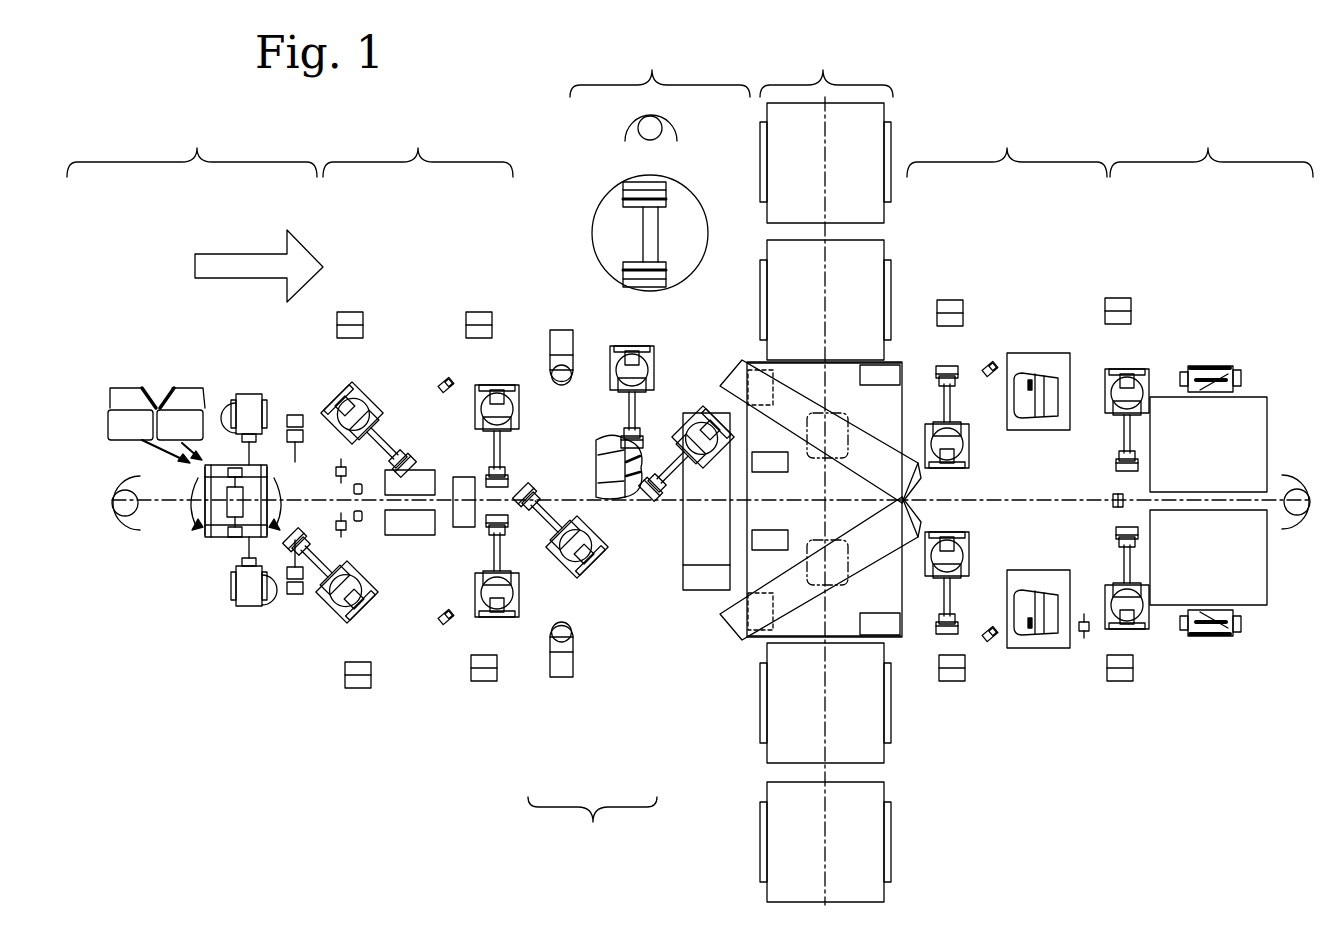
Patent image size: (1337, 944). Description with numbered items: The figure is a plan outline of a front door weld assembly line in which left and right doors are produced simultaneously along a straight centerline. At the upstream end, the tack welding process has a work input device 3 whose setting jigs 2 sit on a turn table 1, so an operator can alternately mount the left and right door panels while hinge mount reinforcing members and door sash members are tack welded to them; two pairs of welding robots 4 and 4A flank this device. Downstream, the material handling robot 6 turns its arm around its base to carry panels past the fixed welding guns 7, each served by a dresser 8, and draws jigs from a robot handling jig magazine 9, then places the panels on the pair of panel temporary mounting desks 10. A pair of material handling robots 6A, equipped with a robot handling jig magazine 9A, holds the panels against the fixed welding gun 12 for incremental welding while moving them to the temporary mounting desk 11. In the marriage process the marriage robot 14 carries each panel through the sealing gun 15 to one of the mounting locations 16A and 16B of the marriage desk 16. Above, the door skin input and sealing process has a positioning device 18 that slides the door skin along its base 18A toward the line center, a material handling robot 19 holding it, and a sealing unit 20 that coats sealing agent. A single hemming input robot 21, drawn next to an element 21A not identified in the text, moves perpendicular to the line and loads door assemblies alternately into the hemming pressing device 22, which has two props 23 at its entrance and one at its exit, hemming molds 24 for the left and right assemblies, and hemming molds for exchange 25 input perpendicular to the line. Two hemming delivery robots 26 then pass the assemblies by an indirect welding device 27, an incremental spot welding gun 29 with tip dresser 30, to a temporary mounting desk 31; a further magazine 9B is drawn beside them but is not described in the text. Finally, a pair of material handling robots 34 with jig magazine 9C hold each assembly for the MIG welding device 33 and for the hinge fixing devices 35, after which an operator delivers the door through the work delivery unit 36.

The turn table 1 is at (218, 541).
The setting jigs 2 is at (200, 540).
The work input device 3 is at (188, 637).
The welding robots 4 is at (266, 395).
The welding robots 4A is at (296, 415).
The material handling robot 6 is at (370, 392).
The material handling robots 6A is at (505, 385).
The fixed welding guns 7 is at (337, 528).
The dresser 8 is at (358, 490).
The robot handling jig magazine 9 is at (348, 312).
The robot handling jig magazine 9A is at (478, 312).
The sensor box 9B is at (952, 300).
The robot handling jig magazine 9C is at (1118, 298).
The panel temporary mounting desks 10 is at (430, 470).
The temporary mounting desk 11 is at (464, 477).
The fixed welding gun 12 is at (445, 378).
The marriage robot 14 is at (582, 578).
The sealing gun 15 is at (563, 678).
The marriage desk 16 is at (597, 470).
The mounting location 16A is at (625, 500).
The mounting location 16B is at (605, 442).
The positioning device 18 is at (690, 185).
The base 18A is at (668, 238).
The material handling robot 19 is at (630, 350).
The sealing unit 20 is at (561, 330).
The hemming input robot 21 is at (690, 412).
The stocker 21A is at (686, 545).
The hemming pressing device 22 is at (905, 362).
The props 23 is at (760, 360).
The hemming molds 24 is at (890, 427).
The hemming molds for exchange 25 is at (870, 145).
The hemming delivery robot 26 is at (968, 446).
The indirect welding device 27 is at (955, 362).
The incremental spot welding gun 29 is at (1036, 480).
The tip dresser 30 is at (993, 365).
The temporary mounting desk 31 is at (1033, 353).
The MIG welding device 33 is at (1112, 500).
The material handling robots 34 is at (1150, 395).
The hinge fixing device 35 is at (1242, 471).
The work delivery unit 36 is at (1236, 385).